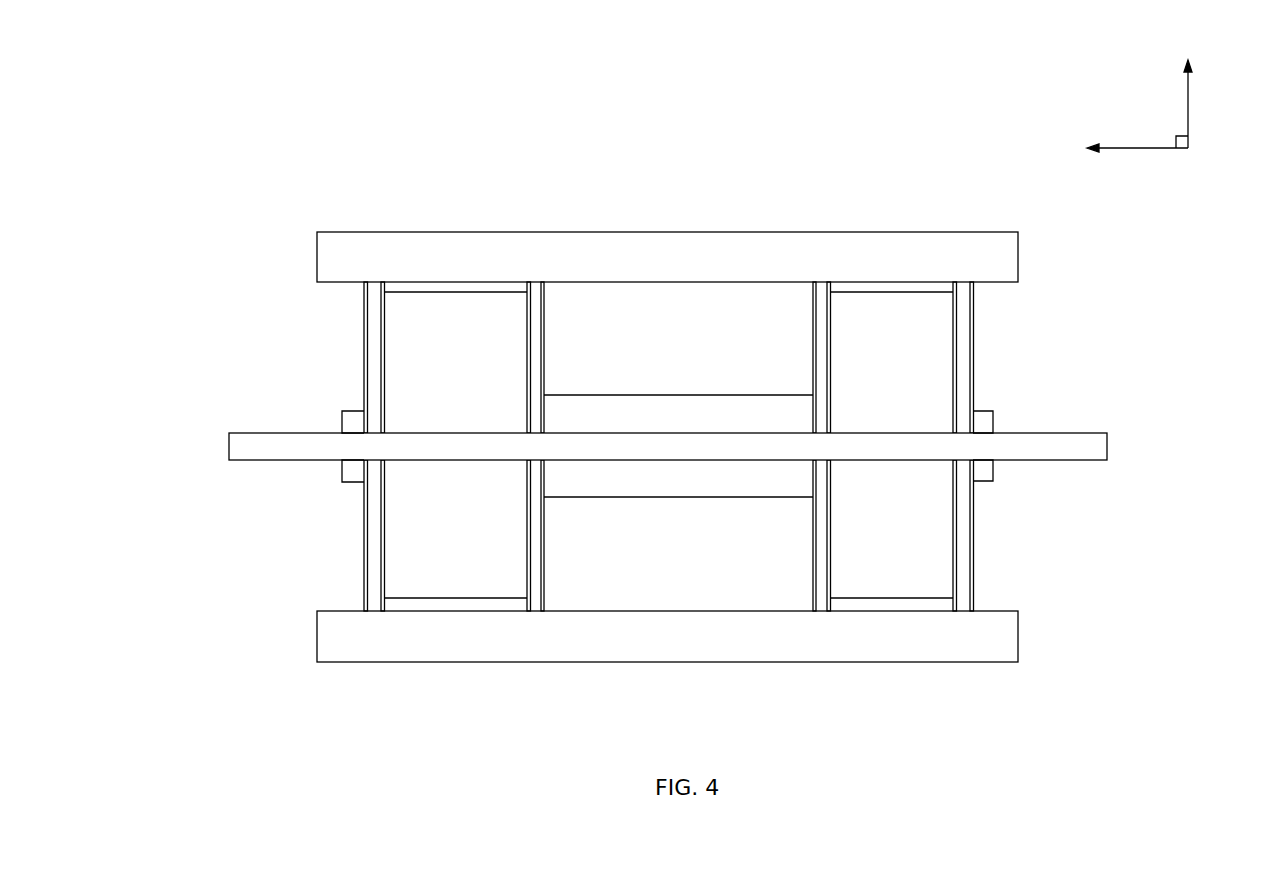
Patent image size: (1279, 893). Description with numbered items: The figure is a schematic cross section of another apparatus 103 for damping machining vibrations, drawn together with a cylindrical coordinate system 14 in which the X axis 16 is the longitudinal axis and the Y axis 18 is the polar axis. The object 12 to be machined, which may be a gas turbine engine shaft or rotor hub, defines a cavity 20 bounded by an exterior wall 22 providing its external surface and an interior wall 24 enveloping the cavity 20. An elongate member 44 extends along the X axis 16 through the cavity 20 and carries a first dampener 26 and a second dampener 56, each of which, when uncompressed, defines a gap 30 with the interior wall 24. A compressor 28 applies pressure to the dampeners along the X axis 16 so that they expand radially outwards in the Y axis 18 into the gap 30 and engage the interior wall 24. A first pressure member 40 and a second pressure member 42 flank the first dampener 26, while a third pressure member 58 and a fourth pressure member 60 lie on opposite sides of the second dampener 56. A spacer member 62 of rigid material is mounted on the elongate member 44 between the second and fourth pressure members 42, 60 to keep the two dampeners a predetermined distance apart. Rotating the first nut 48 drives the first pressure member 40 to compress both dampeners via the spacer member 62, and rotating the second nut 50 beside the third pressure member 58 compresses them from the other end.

The apparatus 103 is at (201, 116).
The object 12 is at (790, 250).
The cylindrical coordinate system 14 is at (1157, 237).
The X axis 16 is at (1150, 149).
The Y axis 18 is at (1187, 80).
The cavity 20 is at (237, 543).
The exterior wall 22 is at (316, 252).
The interior wall 24 is at (985, 284).
The first dampener 26 is at (930, 528).
The compressor 28 is at (1148, 363).
The gap 30 is at (428, 290).
The first pressure member 40 is at (962, 344).
The second pressure member 42 is at (812, 347).
The elongate member 44 is at (1085, 456).
The first nut 48 is at (985, 410).
The second nut 50 is at (353, 419).
The second dampener 56 is at (402, 545).
The third pressure member 58 is at (372, 505).
The fourth pressure member 60 is at (535, 525).
The spacer member 62 is at (613, 410).